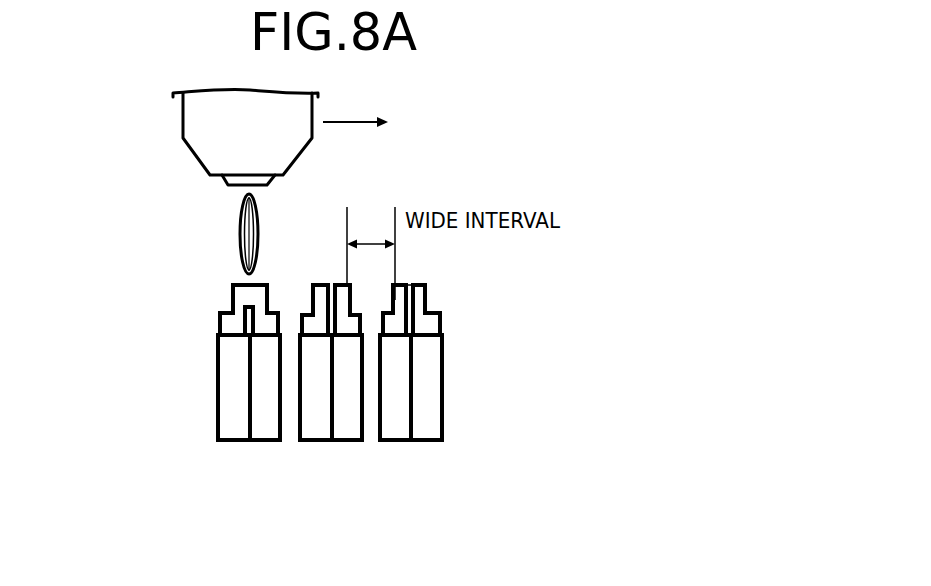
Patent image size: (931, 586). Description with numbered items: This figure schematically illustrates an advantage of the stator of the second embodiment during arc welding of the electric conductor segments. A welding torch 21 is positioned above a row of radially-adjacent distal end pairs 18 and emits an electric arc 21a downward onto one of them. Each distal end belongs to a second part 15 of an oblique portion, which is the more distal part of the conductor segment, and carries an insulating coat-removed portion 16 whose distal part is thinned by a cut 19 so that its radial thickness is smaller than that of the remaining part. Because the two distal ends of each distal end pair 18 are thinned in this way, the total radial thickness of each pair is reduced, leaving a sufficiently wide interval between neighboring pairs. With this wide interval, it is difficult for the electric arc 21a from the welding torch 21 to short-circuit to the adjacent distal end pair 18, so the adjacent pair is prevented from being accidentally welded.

The second part 15 is at (262, 402).
The insulating coat-removed portion 16 is at (262, 325).
The distal end pair 18 is at (411, 284).
The cut 19 is at (262, 298).
The welding torch 21 is at (184, 147).
The electric arc 21a is at (240, 235).